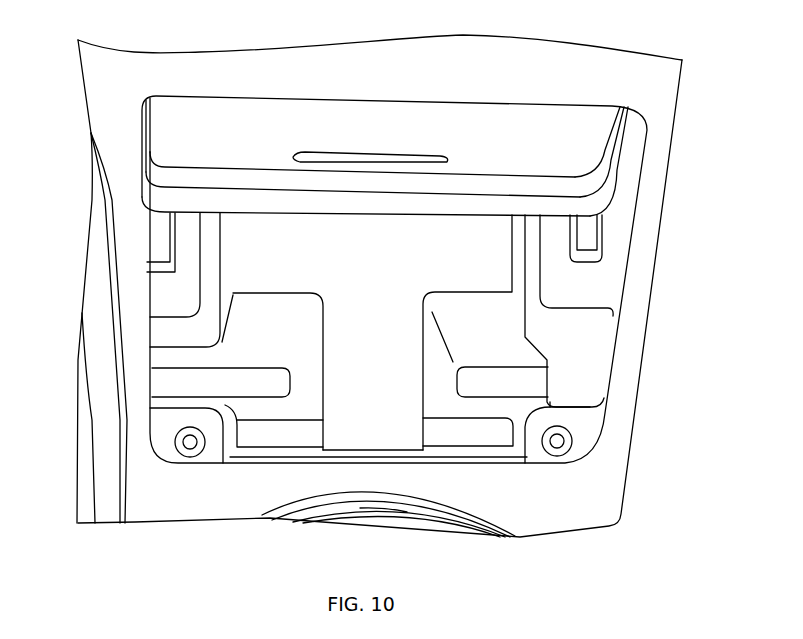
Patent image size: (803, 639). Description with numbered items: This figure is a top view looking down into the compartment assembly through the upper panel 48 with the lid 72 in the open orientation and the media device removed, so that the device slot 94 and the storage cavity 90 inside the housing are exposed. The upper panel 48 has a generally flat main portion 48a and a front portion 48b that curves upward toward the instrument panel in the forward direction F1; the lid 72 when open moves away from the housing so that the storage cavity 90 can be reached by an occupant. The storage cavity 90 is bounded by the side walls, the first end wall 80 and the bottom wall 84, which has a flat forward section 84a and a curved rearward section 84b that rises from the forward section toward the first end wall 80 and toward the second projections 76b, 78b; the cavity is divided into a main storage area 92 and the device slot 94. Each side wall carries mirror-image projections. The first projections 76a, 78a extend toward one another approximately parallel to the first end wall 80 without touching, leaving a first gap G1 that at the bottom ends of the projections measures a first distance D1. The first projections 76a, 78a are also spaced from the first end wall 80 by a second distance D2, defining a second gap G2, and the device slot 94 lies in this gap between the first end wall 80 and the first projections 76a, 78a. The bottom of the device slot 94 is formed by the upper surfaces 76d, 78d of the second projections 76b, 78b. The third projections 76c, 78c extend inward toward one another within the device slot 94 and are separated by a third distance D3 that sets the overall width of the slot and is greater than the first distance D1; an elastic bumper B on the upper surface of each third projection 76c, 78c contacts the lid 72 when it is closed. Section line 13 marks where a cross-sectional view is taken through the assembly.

The upper panel 48 is at (140, 410).
The main portion 48a is at (593, 507).
The front portion 48b is at (465, 68).
The lid 72 is at (525, 137).
The first projection 76a is at (258, 383).
The second projection 76b is at (253, 437).
The third projection 76c is at (210, 452).
The upper surface 76d is at (300, 440).
The first projection 78a is at (482, 382).
The second projection 78b is at (490, 433).
The third projection 78c is at (537, 452).
The upper surface 78d is at (433, 440).
The first end wall 80 is at (390, 452).
The bottom wall 84 is at (470, 245).
The forward section 84a is at (268, 235).
The rearward section 84b is at (400, 340).
The storage cavity 90 is at (382, 243).
The main storage area 92 is at (332, 240).
The device slot 94 is at (555, 426).
The elastic bumper B is at (188, 445).
The section line 13 is at (135, 432).
The first gap G1 is at (330, 330).
The second gap G2 is at (285, 412).
The first distance D1 is at (421, 356).
The second distance D2 is at (268, 453).
The third distance D3 is at (520, 550).
The forward direction F1 is at (707, 232).